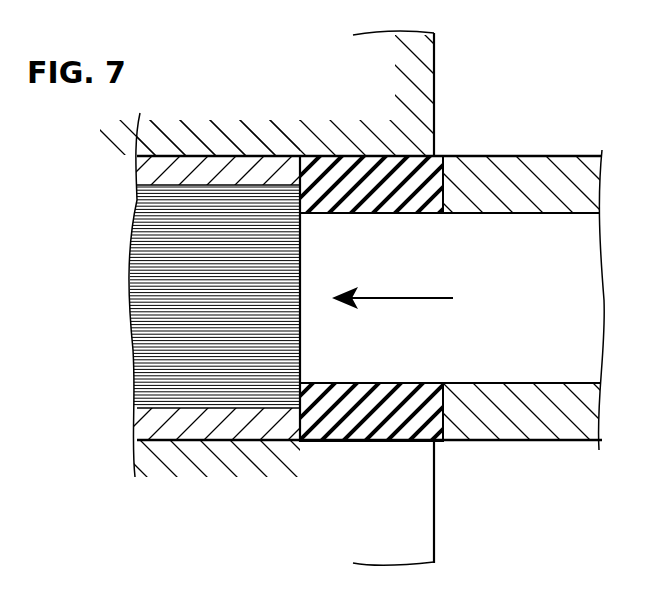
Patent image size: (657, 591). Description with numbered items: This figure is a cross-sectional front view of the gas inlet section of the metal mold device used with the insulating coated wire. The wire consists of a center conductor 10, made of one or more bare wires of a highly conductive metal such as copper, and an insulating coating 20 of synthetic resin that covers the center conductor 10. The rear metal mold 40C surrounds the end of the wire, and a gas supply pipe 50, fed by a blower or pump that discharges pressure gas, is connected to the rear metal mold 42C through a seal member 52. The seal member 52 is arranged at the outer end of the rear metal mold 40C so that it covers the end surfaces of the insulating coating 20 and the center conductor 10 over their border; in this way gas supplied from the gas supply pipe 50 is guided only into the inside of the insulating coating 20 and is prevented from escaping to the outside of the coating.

The center conductor 10 is at (200, 227).
The insulating coating 20 is at (213, 425).
The rear metal mold 40C is at (446, 61).
The rear metal mold 42C is at (347, 166).
The gas supply pipe 50 is at (537, 432).
The seal member 52 is at (403, 420).